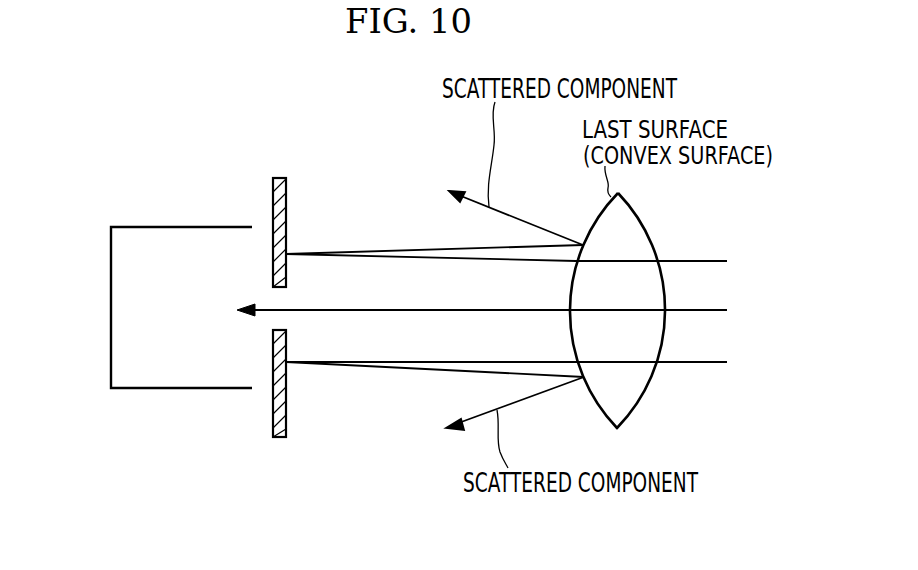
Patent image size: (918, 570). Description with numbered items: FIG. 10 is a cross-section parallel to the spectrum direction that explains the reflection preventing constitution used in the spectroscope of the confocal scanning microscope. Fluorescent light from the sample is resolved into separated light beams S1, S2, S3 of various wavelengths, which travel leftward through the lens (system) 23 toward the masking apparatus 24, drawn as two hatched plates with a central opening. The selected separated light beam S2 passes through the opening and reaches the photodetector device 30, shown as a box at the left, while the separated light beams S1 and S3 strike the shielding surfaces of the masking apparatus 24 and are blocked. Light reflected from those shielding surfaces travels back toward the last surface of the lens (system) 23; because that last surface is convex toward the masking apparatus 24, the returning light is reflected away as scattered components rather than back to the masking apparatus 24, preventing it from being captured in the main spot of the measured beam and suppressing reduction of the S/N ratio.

The photodetector device 30 is at (111, 263).
The masking apparatus 24 is at (273, 193).
The lens (system) 23 is at (646, 226).
The separated light beam S1 is at (712, 262).
The separated light beam S2 is at (712, 311).
The separated light beam S3 is at (707, 362).